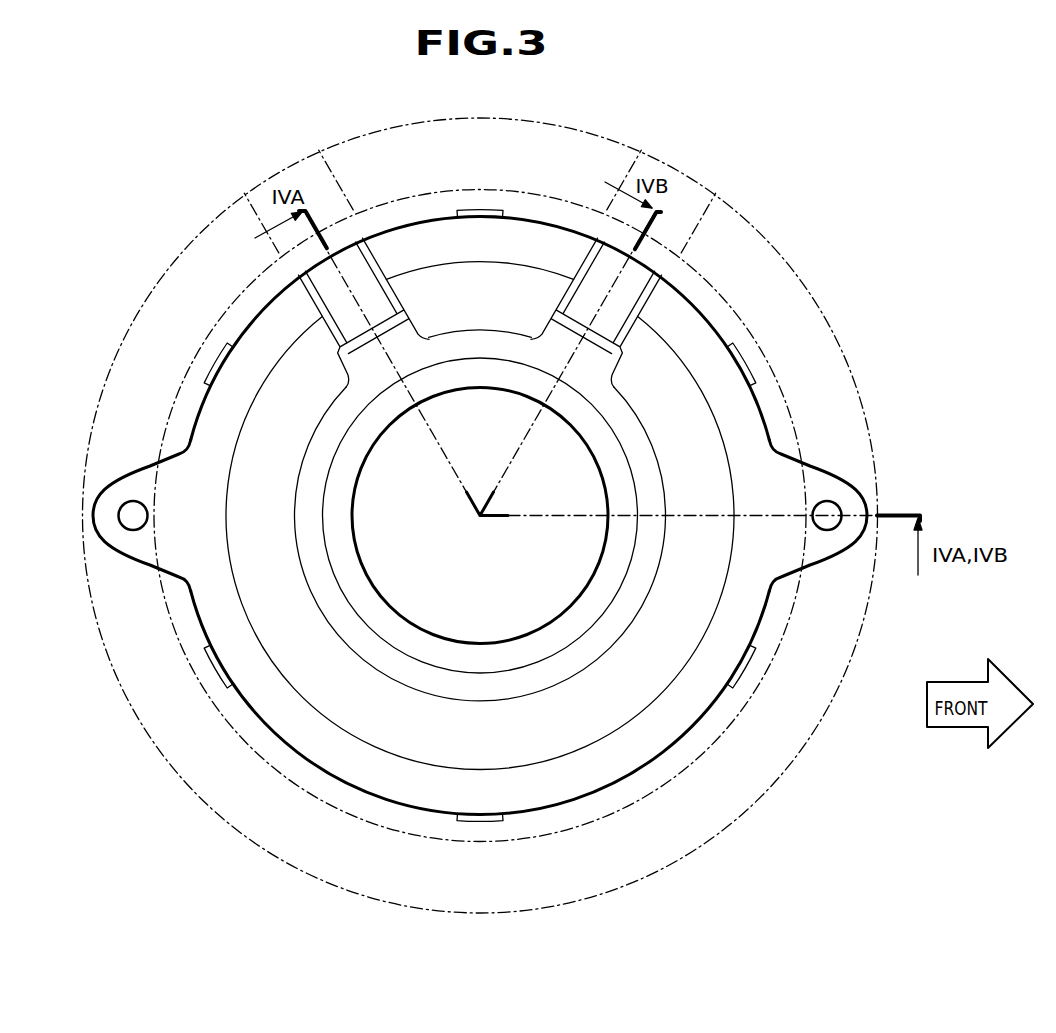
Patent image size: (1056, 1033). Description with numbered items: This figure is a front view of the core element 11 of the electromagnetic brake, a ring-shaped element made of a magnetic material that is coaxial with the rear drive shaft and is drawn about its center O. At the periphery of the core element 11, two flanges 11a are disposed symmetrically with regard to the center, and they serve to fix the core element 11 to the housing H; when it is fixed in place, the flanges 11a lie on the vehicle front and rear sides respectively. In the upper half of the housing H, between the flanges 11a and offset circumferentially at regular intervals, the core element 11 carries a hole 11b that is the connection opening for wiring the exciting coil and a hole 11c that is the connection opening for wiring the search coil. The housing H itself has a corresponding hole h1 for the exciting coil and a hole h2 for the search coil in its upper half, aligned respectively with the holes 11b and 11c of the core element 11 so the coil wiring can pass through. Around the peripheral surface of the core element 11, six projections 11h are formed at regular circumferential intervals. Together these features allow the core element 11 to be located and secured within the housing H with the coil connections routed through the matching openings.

The core element 11 is at (246, 318).
The flange 11a is at (138, 482).
The hole for wiring the exciting coil 11b is at (356, 262).
The hole for wiring the search coil 11c is at (640, 287).
The projection 11h is at (742, 362).
The hole h1 is at (255, 211).
The hole h2 is at (715, 197).
The housing H is at (585, 152).
The center O is at (591, 378).